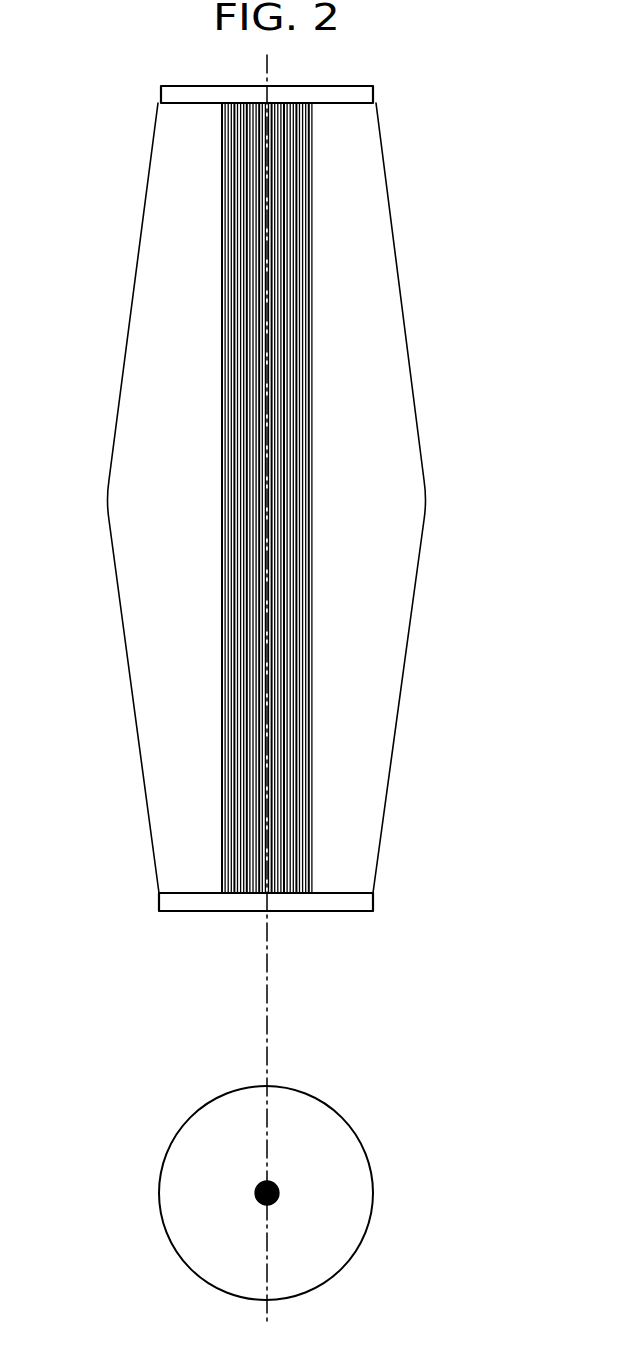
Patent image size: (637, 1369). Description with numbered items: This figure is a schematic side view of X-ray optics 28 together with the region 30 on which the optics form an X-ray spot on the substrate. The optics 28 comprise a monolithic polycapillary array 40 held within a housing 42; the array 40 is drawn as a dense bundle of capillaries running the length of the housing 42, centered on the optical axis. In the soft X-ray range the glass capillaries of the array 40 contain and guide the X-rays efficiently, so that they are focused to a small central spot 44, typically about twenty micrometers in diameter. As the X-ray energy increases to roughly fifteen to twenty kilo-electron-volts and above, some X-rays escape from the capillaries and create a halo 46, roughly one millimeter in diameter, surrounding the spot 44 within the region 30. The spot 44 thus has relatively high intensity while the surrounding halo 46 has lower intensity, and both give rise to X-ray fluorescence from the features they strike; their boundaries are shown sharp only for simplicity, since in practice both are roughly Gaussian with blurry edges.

The X-ray optics 28 is at (110, 143).
The housing 42 is at (408, 352).
The monolithic polycapillary array 40 is at (303, 440).
The region 30 is at (417, 1084).
The spot 44 is at (277, 1185).
The halo 46 is at (337, 1250).